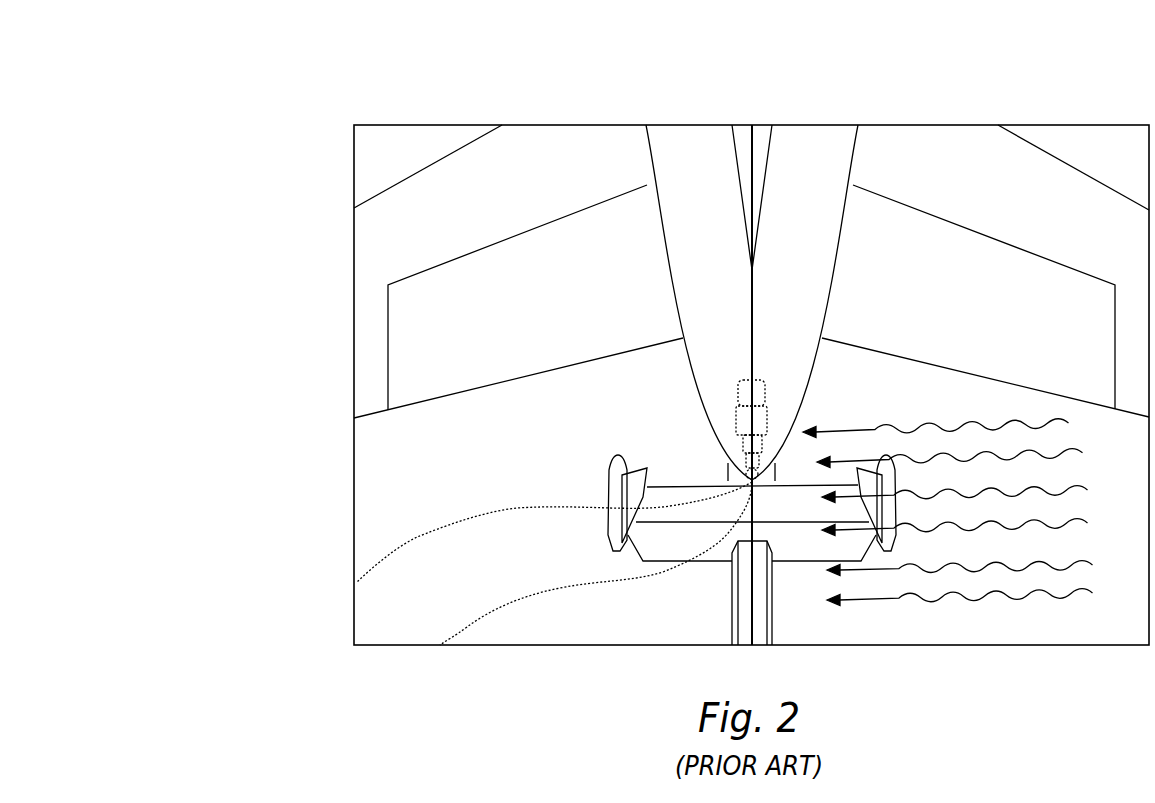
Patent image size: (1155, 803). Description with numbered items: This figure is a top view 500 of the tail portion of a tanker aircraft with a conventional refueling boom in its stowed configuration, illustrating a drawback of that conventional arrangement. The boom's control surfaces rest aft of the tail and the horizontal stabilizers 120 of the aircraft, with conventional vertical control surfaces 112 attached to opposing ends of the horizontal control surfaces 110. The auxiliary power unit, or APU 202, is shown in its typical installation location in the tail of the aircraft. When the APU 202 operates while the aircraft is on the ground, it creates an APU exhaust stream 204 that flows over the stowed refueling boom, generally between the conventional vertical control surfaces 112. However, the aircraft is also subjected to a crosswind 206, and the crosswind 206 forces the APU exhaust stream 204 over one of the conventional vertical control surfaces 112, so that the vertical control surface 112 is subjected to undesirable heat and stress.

The prior art aircraft tail view 500 is at (298, 68).
The horizontal stabilizers 120 is at (586, 338).
The auxiliary power unit (APU) 202 is at (747, 425).
The horizontal control surfaces 110 is at (689, 495).
The conventional vertical control surfaces 112 is at (633, 482).
The APU exhaust stream 204 is at (517, 508).
The crosswind 206 is at (1065, 492).